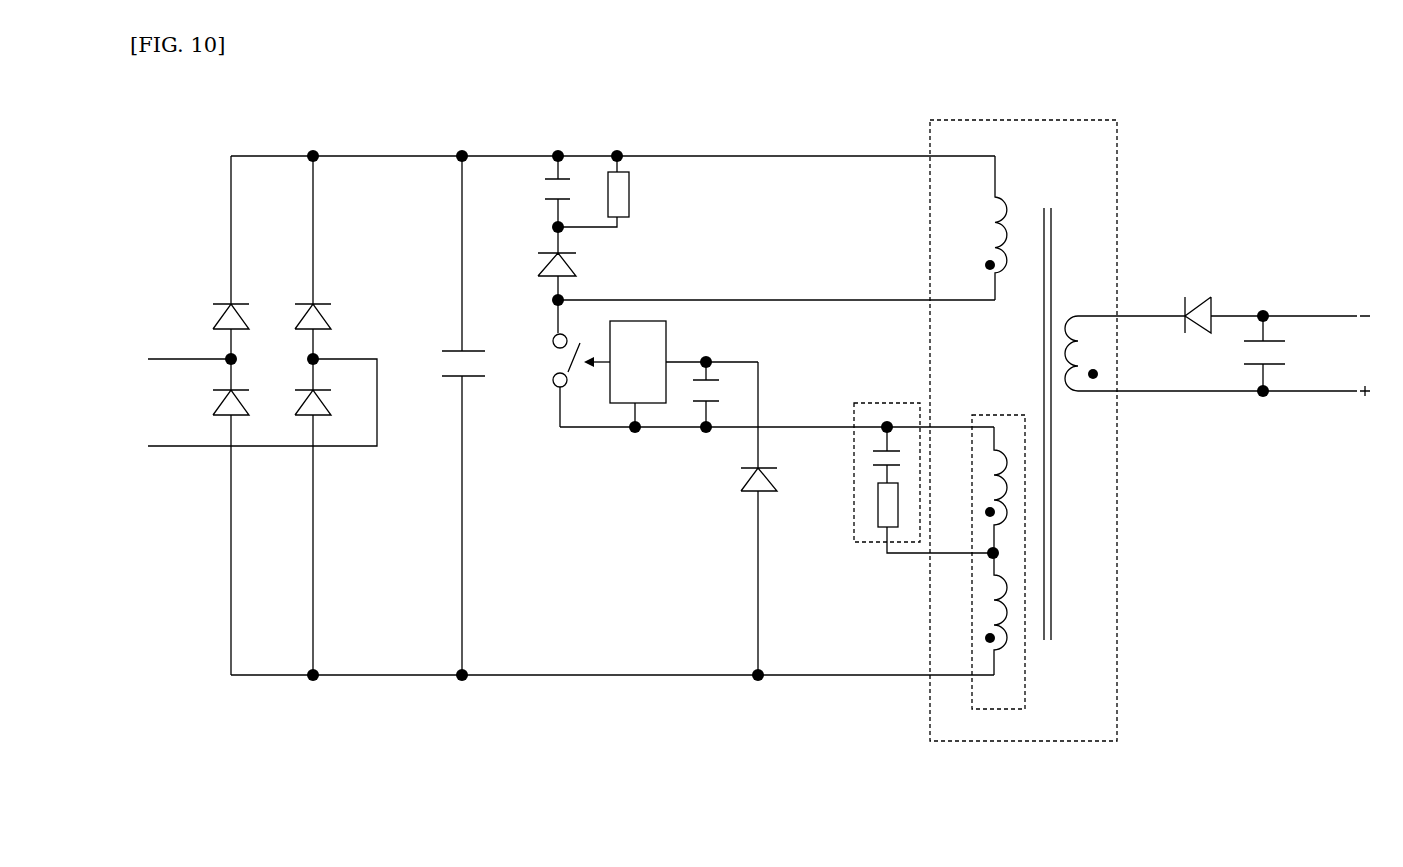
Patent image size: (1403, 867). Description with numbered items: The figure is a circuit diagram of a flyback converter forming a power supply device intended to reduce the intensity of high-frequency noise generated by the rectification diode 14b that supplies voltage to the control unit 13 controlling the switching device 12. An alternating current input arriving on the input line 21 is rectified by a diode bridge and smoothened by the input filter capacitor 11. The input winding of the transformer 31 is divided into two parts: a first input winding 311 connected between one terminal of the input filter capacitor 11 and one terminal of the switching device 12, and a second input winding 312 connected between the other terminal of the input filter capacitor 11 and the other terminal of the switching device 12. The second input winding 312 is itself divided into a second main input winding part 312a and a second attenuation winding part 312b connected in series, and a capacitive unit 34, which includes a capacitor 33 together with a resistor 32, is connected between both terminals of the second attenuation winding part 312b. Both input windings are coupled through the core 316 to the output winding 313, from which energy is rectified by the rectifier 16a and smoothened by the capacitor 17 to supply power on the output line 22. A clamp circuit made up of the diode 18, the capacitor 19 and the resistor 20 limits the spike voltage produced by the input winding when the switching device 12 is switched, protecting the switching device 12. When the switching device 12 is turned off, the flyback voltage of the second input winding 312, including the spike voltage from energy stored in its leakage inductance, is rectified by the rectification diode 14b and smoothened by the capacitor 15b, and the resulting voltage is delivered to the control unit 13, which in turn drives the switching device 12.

The input filter capacitor 11 is at (443, 378).
The switching device 12 is at (553, 362).
The control unit 13 is at (613, 412).
The rectification diode 14b is at (742, 497).
The capacitor 15b is at (692, 410).
The rectifier 16a is at (1203, 291).
The capacitor 17 is at (1287, 355).
The diode 18 is at (542, 284).
The capacitor 19 is at (540, 189).
The resistor 20 is at (637, 191).
The input line 21 is at (406, 680).
The output line 22 is at (1349, 399).
The transformer 31 is at (930, 128).
The first input winding 311 is at (995, 237).
The second input winding 312 is at (958, 688).
The second main input winding part 312a is at (1000, 611).
The second attenuation winding part 312b is at (986, 485).
The output winding 313 is at (1073, 377).
The core 316 is at (1052, 650).
The resistor 32 is at (873, 508).
The capacitor 33 is at (870, 461).
The capacitive unit 34 is at (872, 400).